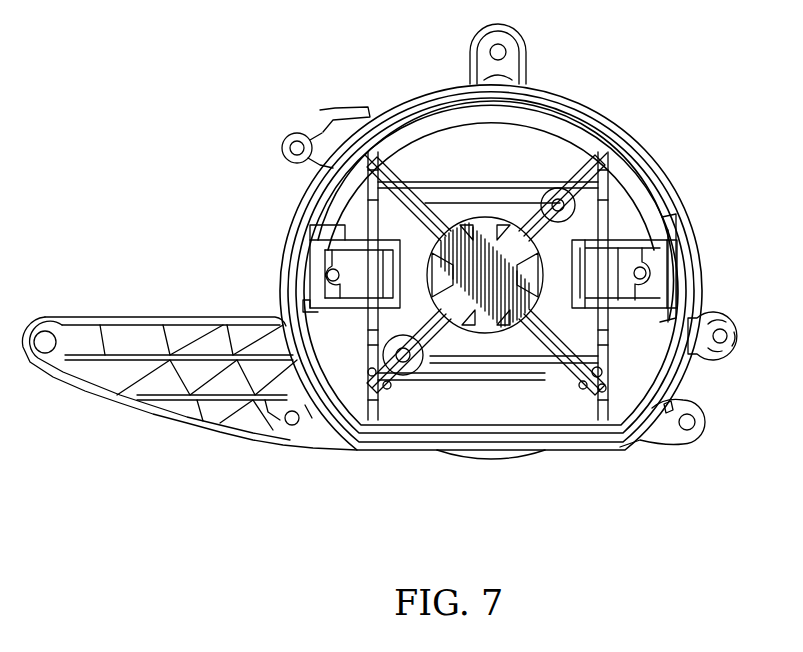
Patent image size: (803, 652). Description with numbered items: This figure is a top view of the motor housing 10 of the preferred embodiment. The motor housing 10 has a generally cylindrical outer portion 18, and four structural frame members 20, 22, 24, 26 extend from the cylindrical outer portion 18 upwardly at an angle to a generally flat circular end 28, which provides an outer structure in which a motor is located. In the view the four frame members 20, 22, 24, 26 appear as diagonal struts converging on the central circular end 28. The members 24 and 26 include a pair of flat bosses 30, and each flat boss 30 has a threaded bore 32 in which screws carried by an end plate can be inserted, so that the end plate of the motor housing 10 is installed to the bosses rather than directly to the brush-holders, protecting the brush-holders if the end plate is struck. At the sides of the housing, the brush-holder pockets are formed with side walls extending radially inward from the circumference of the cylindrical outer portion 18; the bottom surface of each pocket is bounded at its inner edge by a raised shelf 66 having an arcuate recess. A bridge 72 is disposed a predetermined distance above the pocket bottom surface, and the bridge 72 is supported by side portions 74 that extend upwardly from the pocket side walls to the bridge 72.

The motor housing 10 is at (607, 73).
The cylindrical outer portion 18 is at (620, 122).
The structural frame member 20 is at (405, 160).
The structural frame member 22 is at (578, 383).
The structural frame member 24 is at (363, 408).
The structural frame member 26 is at (576, 177).
The flat circular end 28 is at (483, 250).
The flat boss 30 is at (574, 210).
The threaded bore 32 is at (557, 198).
The raised shelf 66 is at (342, 252).
The bridge 72 is at (373, 266).
The side portion 74 is at (342, 250).